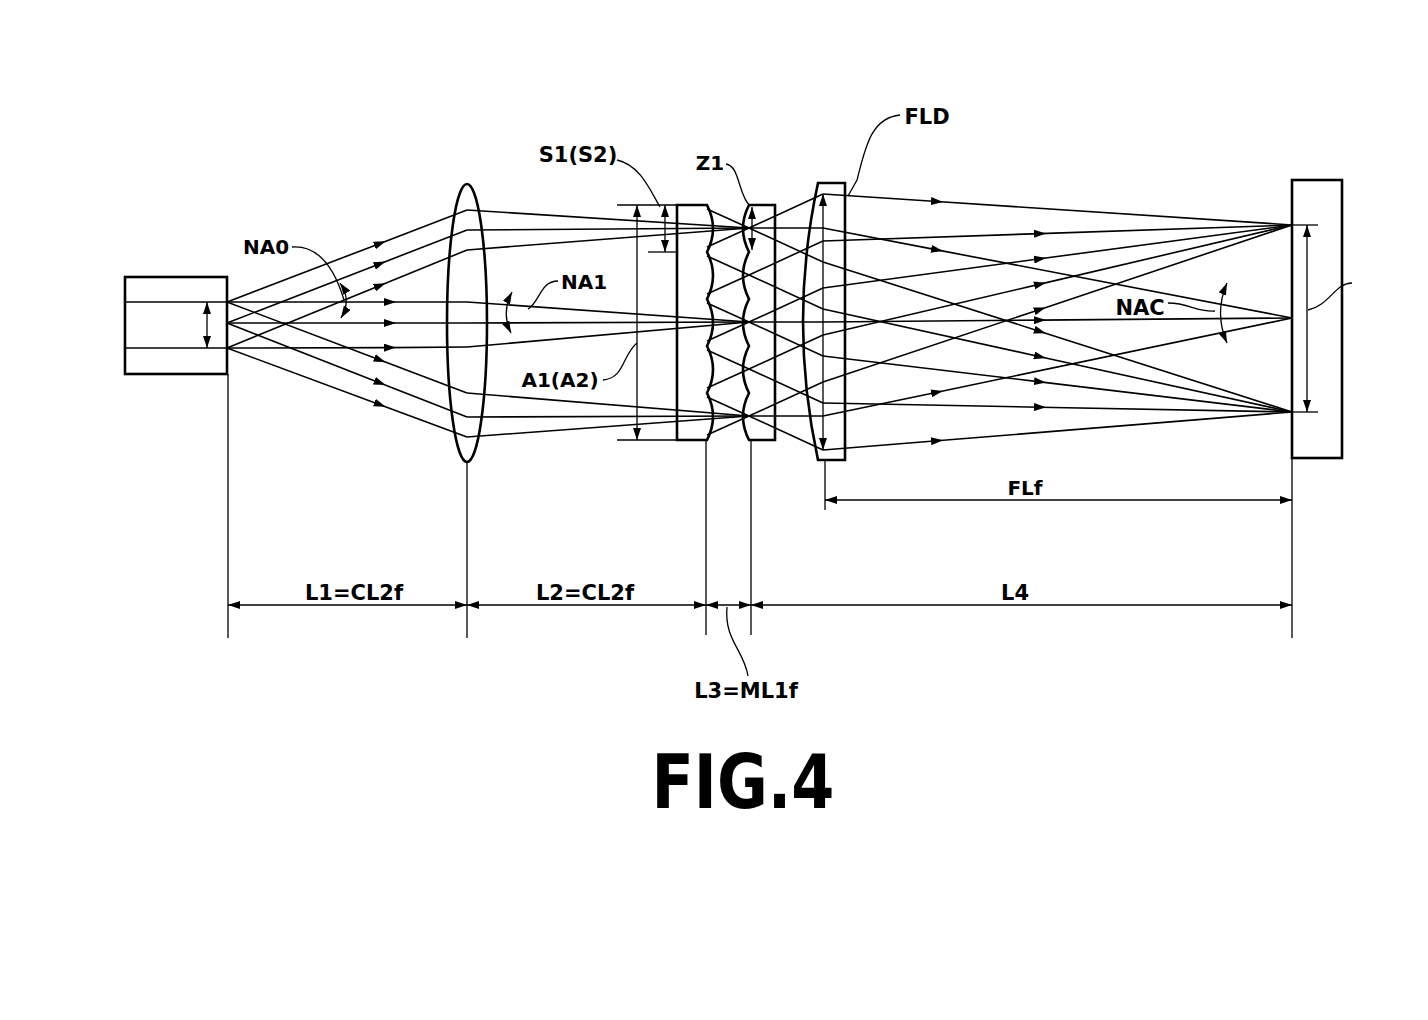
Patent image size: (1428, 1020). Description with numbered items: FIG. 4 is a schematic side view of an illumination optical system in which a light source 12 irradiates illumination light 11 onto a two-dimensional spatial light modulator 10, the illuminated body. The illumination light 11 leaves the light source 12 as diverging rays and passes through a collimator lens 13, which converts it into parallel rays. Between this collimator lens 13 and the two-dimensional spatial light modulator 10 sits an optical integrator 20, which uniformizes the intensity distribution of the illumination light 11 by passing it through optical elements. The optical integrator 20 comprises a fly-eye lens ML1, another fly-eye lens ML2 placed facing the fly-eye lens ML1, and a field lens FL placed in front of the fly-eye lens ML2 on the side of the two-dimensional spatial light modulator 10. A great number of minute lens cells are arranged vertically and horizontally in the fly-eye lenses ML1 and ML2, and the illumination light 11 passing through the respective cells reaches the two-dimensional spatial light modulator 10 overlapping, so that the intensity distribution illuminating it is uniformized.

The two-dimensional spatial light modulator 10 is at (1313, 188).
The illumination light 11 is at (343, 250).
The light source 12 is at (187, 266).
The collimator lens 13 is at (461, 184).
The optical integrator 20 is at (744, 251).
The fly-eye lens ML1 is at (688, 203).
The fly-eye lens ML2 is at (762, 203).
The field lens FL is at (822, 275).